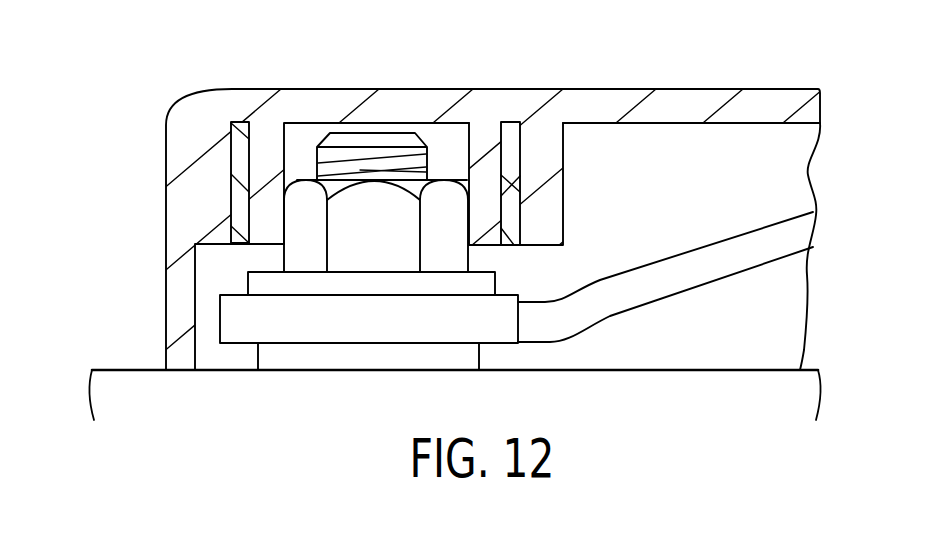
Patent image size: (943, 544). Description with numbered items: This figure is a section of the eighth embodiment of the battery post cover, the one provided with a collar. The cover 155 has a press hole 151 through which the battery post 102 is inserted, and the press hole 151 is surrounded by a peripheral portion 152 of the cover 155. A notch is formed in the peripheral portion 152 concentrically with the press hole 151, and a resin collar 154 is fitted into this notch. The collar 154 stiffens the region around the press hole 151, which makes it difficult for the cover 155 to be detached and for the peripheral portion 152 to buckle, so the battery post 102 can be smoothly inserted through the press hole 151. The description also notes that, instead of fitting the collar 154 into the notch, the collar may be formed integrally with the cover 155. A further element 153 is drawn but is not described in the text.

The battery post 102 is at (347, 150).
The press hole 151 is at (468, 163).
The peripheral portion 152 is at (563, 173).
The seal plate 153 is at (519, 182).
The resin collar 154 is at (231, 193).
The cover 155 is at (714, 66).